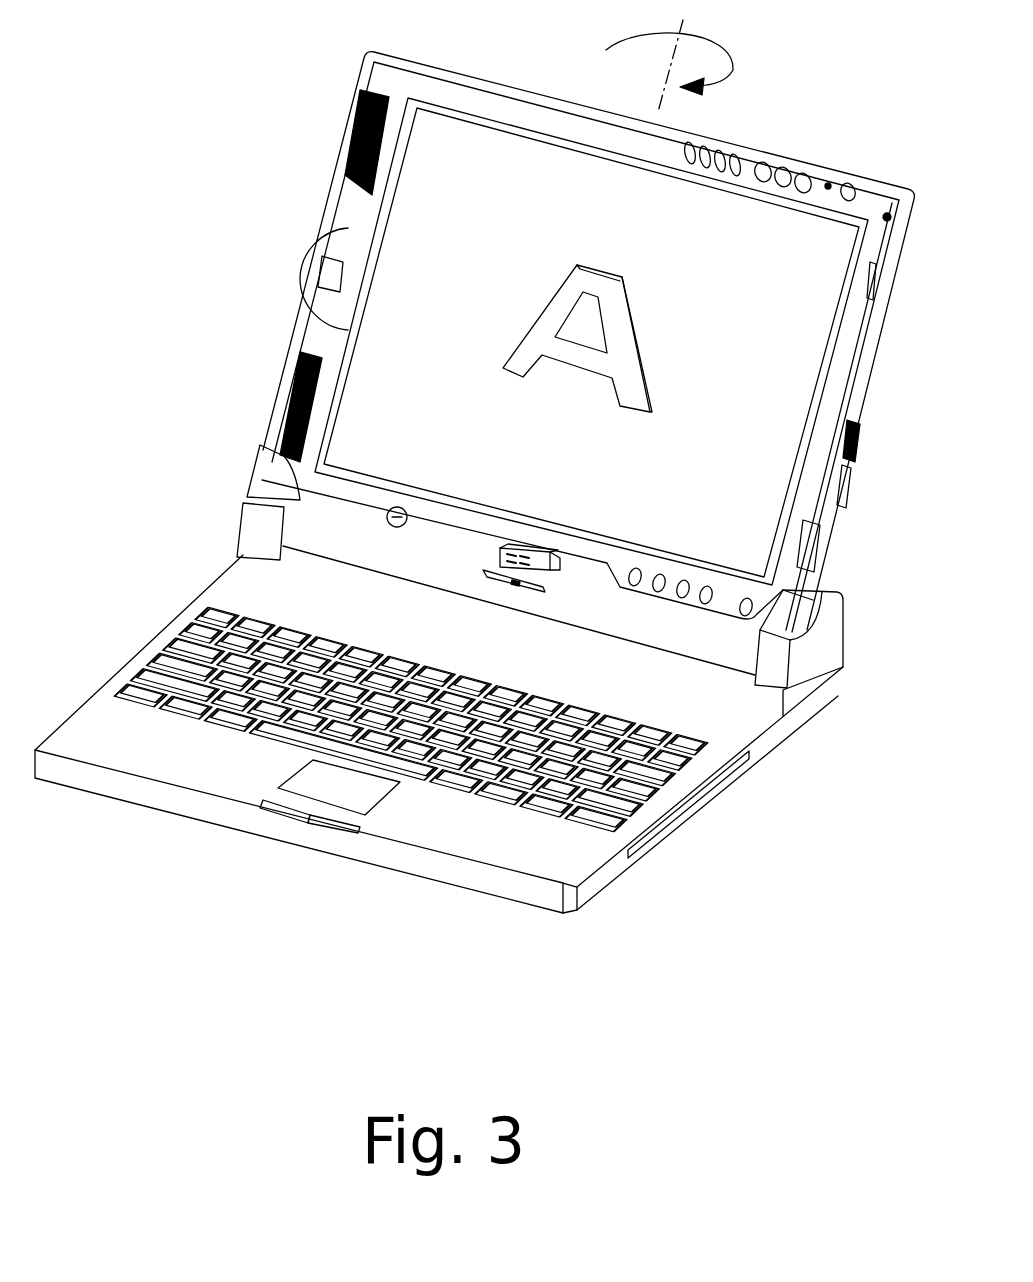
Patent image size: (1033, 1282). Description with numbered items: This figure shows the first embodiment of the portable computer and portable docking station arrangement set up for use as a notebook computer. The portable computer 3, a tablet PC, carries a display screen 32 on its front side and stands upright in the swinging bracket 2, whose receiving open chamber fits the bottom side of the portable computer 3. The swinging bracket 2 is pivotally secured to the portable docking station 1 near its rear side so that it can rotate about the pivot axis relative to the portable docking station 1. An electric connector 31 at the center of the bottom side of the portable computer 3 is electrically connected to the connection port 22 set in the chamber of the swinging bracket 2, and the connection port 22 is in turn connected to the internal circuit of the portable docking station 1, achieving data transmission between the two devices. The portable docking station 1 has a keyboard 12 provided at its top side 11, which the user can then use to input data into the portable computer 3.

The portable docking station 1 is at (577, 855).
The top side 11 is at (477, 853).
The keyboard 12 is at (648, 780).
The swinging bracket 2 is at (722, 652).
The connection port 22 is at (497, 548).
The portable computer 3 is at (508, 102).
The electric connector 31 is at (563, 537).
The display screen 32 is at (763, 215).